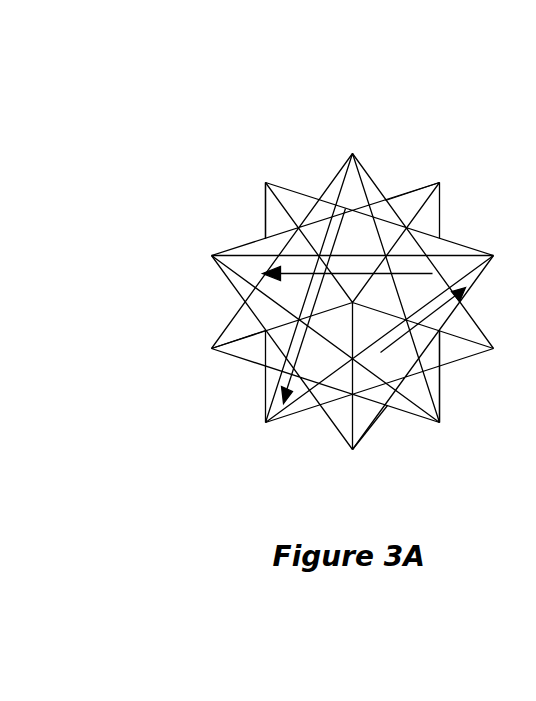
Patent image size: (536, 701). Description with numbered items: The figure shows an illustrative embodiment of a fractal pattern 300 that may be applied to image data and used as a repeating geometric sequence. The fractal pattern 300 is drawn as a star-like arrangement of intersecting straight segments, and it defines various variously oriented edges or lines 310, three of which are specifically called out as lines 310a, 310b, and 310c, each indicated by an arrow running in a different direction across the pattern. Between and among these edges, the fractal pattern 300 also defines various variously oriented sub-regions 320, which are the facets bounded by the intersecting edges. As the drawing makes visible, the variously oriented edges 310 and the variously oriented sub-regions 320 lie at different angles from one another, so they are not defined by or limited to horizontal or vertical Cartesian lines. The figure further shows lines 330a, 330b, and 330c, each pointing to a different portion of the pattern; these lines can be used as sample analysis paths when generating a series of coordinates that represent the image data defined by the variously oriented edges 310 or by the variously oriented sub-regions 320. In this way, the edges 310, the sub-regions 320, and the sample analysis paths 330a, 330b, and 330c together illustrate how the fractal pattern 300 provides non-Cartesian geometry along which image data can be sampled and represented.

The fractal pattern 300 is at (492, 164).
The variously oriented edges or lines 310 is at (378, 205).
The line 310a is at (292, 404).
The line 310b is at (458, 252).
The line 310c is at (213, 257).
The variously oriented sub-regions 320 is at (410, 378).
The line 330a is at (395, 395).
The line 330b is at (300, 272).
The line 330c is at (300, 352).